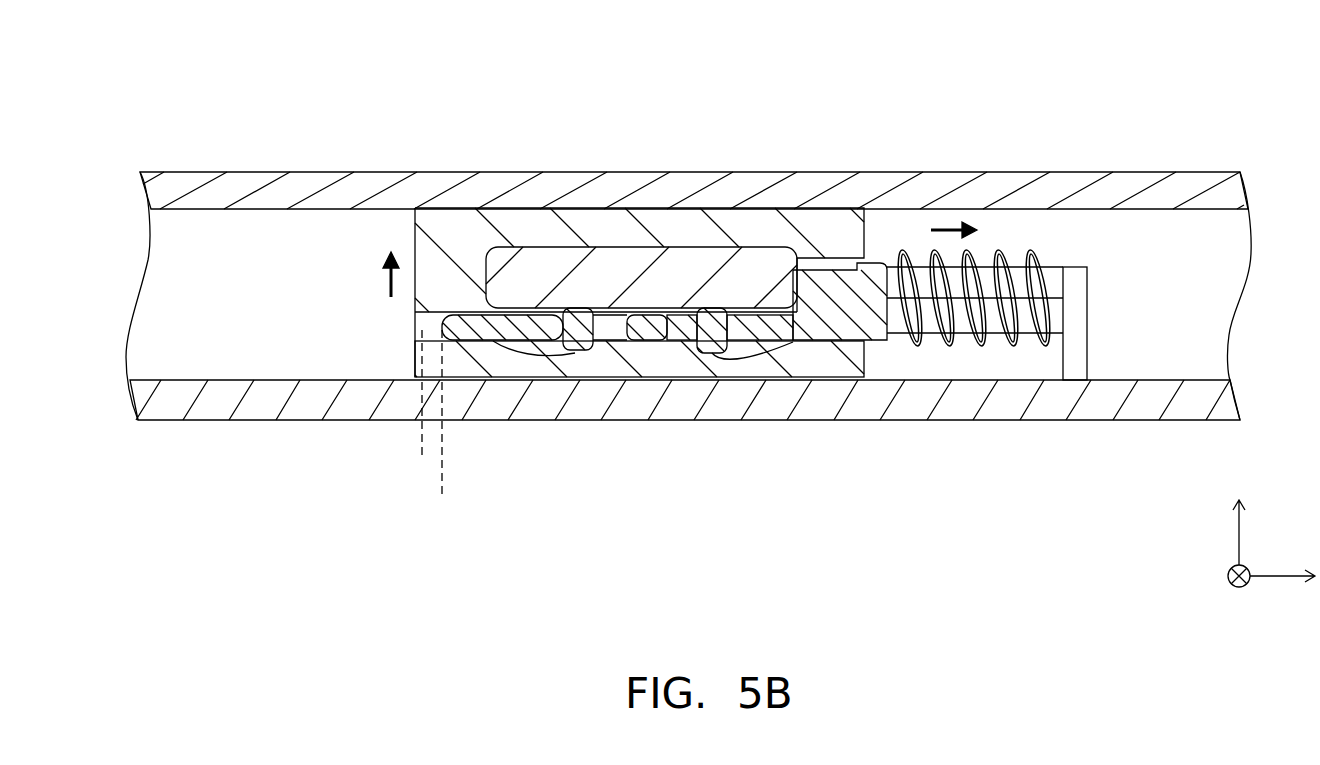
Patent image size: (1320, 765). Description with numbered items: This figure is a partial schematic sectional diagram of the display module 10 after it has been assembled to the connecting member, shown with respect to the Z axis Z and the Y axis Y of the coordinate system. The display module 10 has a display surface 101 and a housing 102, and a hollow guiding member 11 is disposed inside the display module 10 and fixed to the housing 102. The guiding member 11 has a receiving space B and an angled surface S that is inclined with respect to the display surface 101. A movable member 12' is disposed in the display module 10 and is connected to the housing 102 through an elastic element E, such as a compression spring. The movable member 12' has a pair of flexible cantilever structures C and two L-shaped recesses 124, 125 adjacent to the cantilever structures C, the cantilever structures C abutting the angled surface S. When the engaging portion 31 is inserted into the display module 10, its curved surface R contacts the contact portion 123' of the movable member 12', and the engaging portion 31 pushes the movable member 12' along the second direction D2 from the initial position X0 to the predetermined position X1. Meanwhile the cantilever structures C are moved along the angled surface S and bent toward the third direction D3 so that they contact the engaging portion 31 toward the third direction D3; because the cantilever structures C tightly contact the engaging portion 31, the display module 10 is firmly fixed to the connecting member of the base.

The display module 10 is at (1266, 108).
The display surface 101 is at (1073, 172).
The housing 102 is at (1080, 400).
The guiding member 11 is at (450, 227).
The movable member 12' is at (641, 209).
The contact portion 123' is at (928, 209).
The L-shaped recess 124 is at (512, 320).
The L-shaped recess 125 is at (765, 263).
The engaging portion 31 is at (752, 295).
The receiving space B is at (560, 262).
The cantilever structures C is at (578, 343).
The angled surface S is at (597, 340).
The curved surface R is at (795, 340).
The elastic element E is at (983, 335).
The initial position X0 is at (416, 411).
The predetermined position X1 is at (441, 429).
The second direction D2 is at (935, 230).
The third direction D3 is at (371, 274).
The Z axis Z is at (1239, 528).
The Y axis Y is at (1259, 592).